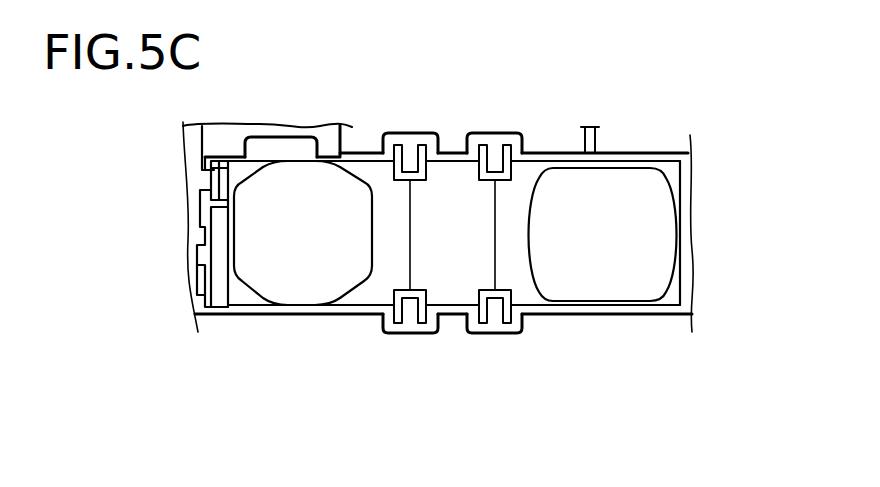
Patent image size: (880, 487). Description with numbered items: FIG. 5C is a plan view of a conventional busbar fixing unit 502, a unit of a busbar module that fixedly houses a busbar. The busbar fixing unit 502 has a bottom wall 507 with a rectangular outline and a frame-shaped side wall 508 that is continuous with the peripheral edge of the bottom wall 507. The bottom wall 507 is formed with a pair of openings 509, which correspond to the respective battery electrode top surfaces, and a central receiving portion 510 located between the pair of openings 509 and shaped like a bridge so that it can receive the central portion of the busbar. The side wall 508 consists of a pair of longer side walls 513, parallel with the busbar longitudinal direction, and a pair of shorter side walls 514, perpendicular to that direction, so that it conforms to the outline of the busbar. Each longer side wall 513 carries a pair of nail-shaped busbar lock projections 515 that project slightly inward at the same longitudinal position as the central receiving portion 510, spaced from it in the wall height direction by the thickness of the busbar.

The busbar fixing unit 502 is at (642, 146).
The bottom wall 507 is at (530, 286).
The side wall 508 is at (653, 311).
The openings 509 is at (648, 232).
The central receiving portion 510 is at (452, 192).
The longer side walls 513 is at (556, 152).
The shorter side walls 514 is at (221, 264).
The busbar lock projections 515 is at (412, 161).